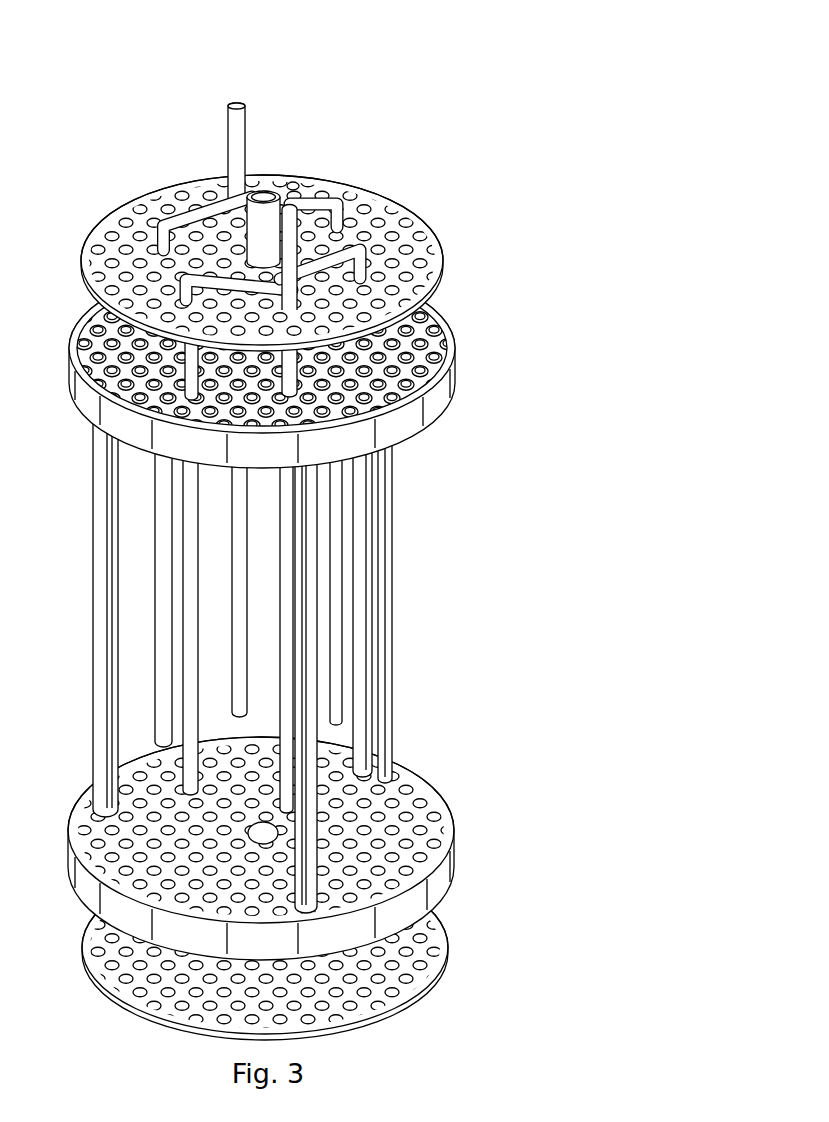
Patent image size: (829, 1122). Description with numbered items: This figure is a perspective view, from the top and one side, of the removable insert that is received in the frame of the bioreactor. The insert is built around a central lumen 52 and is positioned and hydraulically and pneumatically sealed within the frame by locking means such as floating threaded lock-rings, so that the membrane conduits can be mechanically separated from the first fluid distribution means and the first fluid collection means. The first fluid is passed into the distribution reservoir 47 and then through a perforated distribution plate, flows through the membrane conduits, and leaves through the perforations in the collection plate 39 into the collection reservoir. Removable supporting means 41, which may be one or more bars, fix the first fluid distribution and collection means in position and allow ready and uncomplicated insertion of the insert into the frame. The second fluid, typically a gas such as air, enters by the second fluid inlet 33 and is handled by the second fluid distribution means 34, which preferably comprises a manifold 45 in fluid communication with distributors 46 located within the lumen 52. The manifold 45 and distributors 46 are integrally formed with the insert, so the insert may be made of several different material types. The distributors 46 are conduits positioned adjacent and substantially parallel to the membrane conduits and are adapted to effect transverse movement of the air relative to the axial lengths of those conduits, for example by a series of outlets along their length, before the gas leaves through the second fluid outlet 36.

The second fluid inlet 33 is at (238, 102).
The second fluid distribution means 34 is at (340, 196).
The second fluid outlet 36 is at (248, 832).
The collection plate 39 is at (446, 255).
The supporting means 41 is at (393, 690).
The manifold 45 is at (363, 262).
The distributors 46 is at (183, 597).
The distribution reservoir 47 is at (243, 232).
The lumen 52 is at (292, 523).